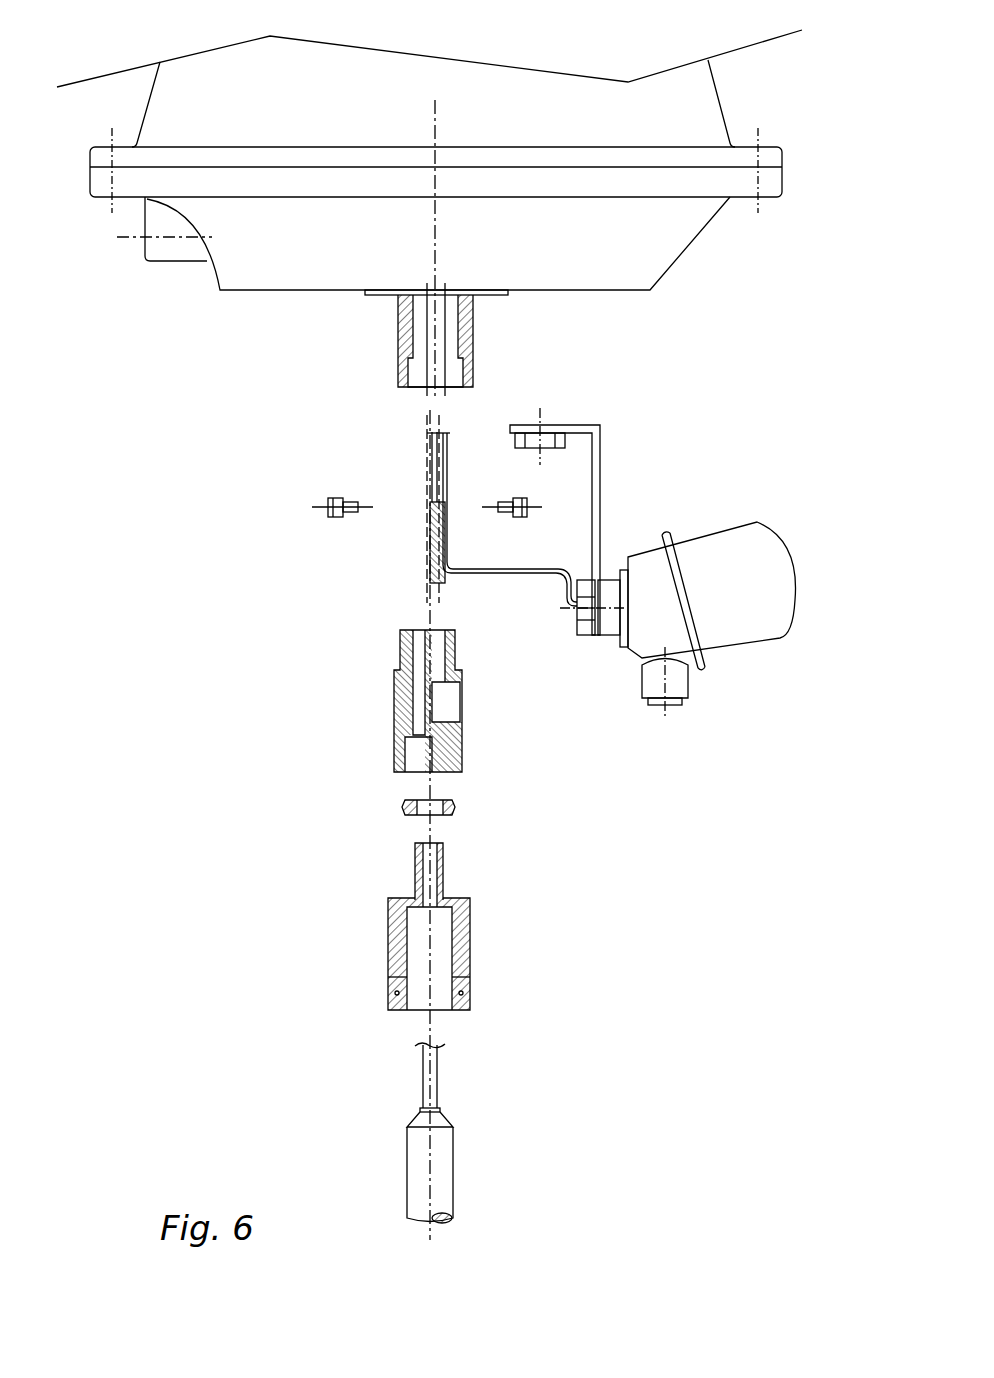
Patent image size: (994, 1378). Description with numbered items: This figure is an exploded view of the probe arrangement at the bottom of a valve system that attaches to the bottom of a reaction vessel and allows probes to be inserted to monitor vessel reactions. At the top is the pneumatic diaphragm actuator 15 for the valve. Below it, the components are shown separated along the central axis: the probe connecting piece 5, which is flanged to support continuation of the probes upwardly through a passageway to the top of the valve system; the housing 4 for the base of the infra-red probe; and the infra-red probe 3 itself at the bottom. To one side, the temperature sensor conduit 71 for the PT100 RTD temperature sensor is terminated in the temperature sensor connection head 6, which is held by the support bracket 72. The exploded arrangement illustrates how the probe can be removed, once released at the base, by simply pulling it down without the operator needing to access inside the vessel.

The pneumatic diaphragm actuator 15 is at (265, 310).
The support bracket 72 is at (577, 425).
The temperature sensor conduit 71 is at (513, 578).
The temperature sensor connection head 6 is at (725, 527).
The probe connecting piece 5 is at (392, 700).
The housing 4 is at (470, 942).
The infra-red probe 3 is at (443, 1148).